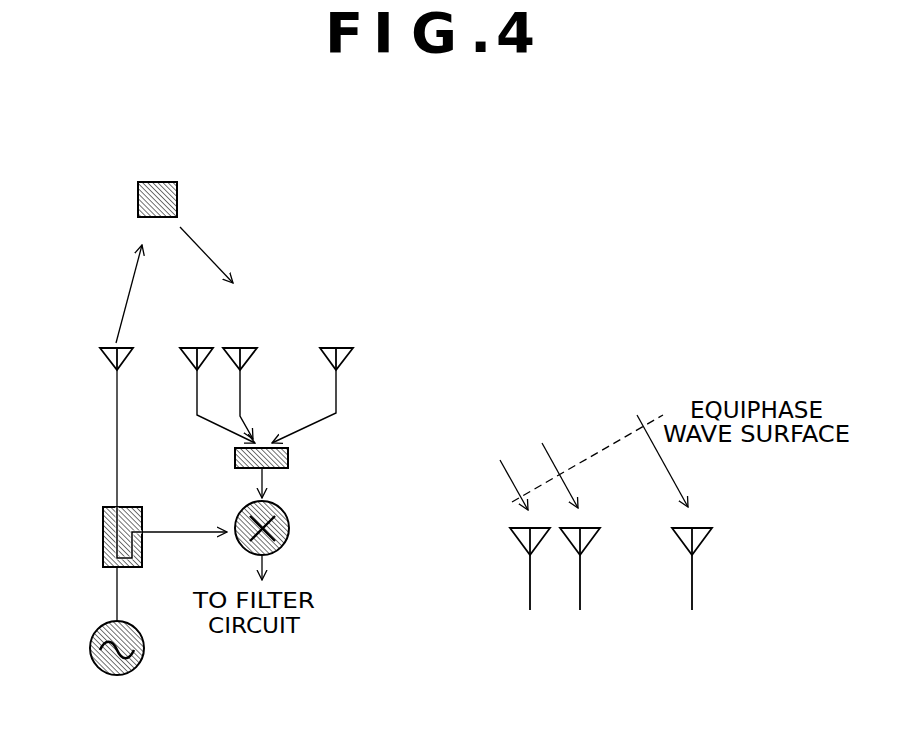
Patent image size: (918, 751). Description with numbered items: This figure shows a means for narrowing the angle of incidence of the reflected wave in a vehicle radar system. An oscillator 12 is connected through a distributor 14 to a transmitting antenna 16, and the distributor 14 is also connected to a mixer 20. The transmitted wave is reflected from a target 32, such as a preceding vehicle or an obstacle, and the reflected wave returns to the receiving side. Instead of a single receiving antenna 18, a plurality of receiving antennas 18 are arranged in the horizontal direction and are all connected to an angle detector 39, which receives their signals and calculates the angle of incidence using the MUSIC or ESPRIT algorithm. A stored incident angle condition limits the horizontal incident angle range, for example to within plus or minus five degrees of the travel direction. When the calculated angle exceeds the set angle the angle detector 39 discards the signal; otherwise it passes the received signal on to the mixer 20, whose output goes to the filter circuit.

The oscillator 12 is at (98, 670).
The distributor 14 is at (103, 538).
The transmitting antenna 16 is at (103, 352).
The receiving antenna 18 is at (717, 617).
The mixer 20 is at (290, 527).
The target 32 is at (152, 182).
The angle detector 39 is at (288, 458).